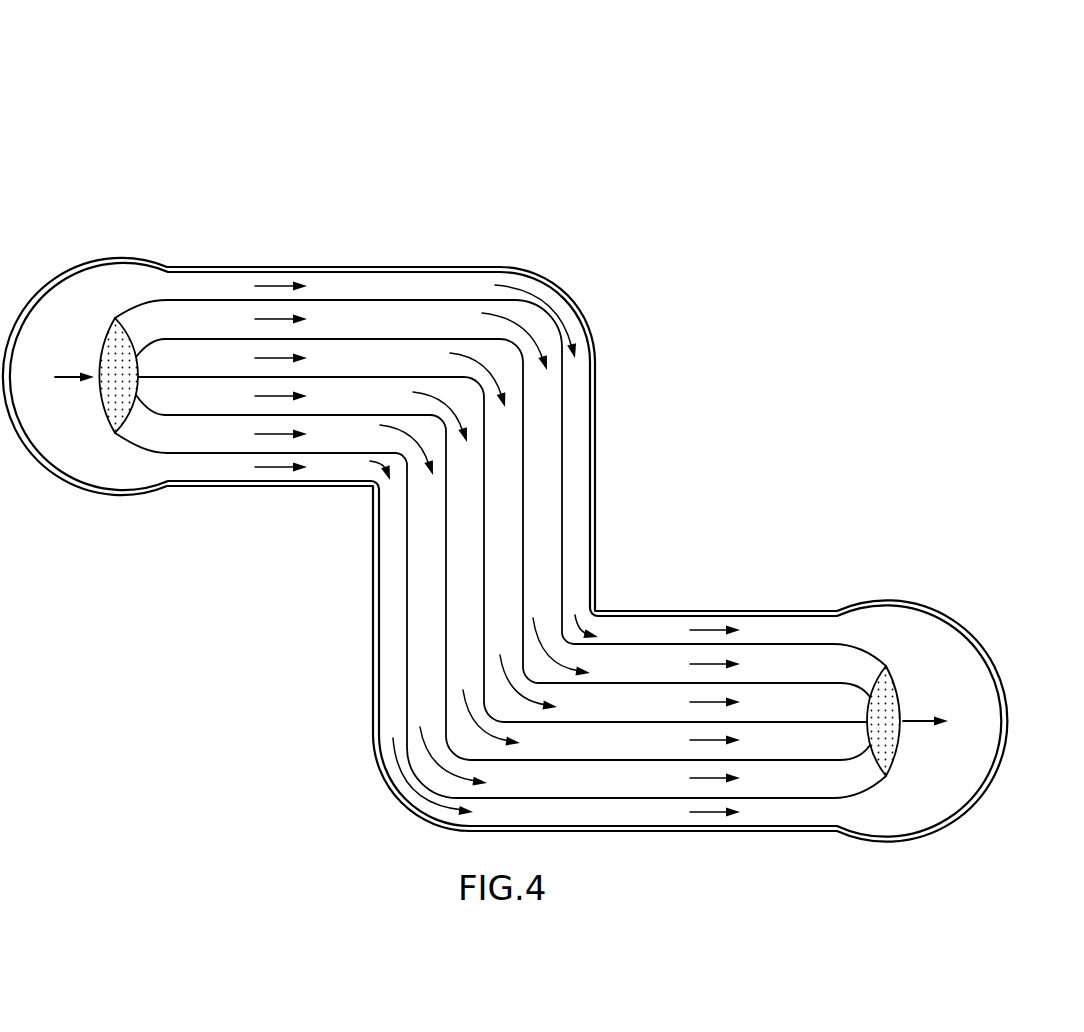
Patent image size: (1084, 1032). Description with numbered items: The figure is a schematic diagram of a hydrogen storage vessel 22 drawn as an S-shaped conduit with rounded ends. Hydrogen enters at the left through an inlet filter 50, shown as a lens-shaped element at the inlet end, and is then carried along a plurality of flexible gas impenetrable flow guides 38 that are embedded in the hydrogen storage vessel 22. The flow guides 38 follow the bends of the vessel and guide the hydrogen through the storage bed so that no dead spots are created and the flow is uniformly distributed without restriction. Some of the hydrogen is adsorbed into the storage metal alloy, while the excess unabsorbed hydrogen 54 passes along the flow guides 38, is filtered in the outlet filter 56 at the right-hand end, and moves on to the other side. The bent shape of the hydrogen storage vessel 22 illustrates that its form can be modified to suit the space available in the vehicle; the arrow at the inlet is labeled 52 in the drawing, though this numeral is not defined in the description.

The hydrogen storage vessel 22 is at (818, 64).
The flexible gas impenetrable flow guides 38 is at (562, 487).
The inlet filter 50 is at (117, 433).
The inlet 52 is at (58, 376).
The excess unabsorbed hydrogen 54 is at (922, 718).
The outlet filter 56 is at (885, 780).